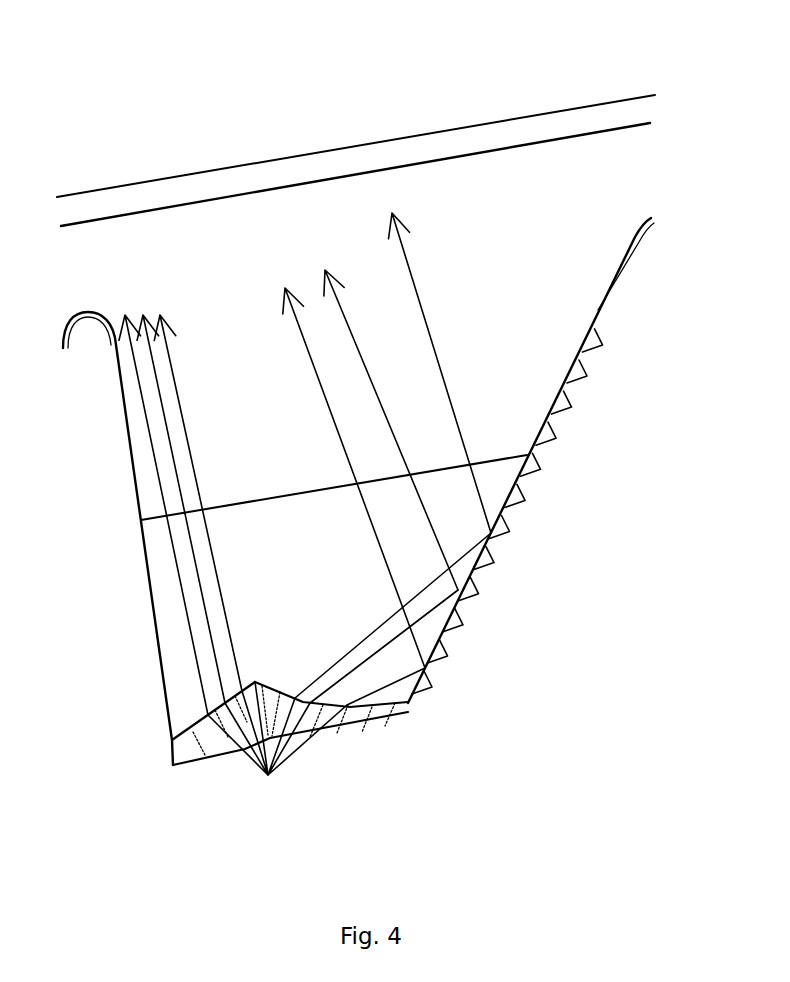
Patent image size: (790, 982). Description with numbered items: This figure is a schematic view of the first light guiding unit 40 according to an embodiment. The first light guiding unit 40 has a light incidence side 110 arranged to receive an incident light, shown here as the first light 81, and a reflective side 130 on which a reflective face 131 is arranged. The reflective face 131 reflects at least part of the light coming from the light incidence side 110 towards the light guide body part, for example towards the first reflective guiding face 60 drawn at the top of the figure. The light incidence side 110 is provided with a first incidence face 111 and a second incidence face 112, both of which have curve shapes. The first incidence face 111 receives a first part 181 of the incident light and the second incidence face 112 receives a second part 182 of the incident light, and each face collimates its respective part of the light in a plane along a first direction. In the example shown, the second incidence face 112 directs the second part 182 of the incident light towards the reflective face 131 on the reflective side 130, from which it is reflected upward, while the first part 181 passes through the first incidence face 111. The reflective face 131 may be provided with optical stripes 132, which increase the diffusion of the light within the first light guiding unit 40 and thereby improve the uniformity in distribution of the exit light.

The first light guiding unit 40 is at (342, 33).
The first reflective guiding face 60 is at (219, 190).
The reflective side 130 is at (549, 460).
The reflective face 131 is at (561, 383).
The optical stripes 132 is at (510, 531).
The light incidence side 110 is at (290, 535).
The first incidence face 111 is at (170, 750).
The second incidence face 112 is at (363, 718).
The first light 81 is at (297, 772).
The first part of the incident light 181 is at (244, 750).
The second part of the incident light 182 is at (258, 818).